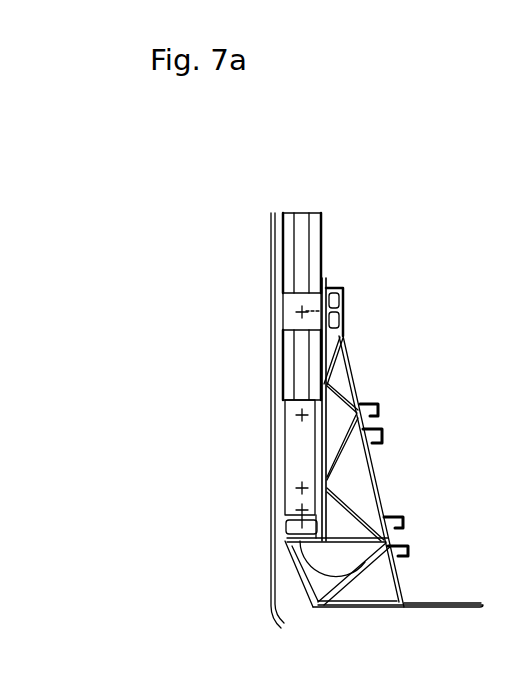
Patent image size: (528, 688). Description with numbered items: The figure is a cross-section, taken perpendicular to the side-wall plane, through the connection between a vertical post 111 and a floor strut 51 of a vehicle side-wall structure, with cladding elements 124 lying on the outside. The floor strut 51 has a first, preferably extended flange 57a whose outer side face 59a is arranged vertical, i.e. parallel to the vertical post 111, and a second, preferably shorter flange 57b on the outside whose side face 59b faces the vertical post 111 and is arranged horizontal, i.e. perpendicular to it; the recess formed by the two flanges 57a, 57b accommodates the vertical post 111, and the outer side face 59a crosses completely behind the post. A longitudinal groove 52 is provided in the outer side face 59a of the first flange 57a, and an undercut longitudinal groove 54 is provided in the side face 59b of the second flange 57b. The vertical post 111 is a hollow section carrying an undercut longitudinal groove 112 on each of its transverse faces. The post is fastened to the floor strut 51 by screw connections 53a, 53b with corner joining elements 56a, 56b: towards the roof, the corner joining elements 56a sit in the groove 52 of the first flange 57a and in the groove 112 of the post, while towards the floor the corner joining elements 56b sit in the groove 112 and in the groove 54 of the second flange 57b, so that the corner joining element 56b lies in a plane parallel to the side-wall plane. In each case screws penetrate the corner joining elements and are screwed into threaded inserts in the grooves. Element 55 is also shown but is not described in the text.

The cladding elements 124 is at (269, 230).
The vertical post 111 is at (320, 222).
The undercut longitudinal groove 112 is at (302, 258).
The screw connections 53a is at (292, 293).
The corner joining elements 56a is at (296, 313).
The outer side face 59a is at (320, 353).
The longitudinal groove 52 is at (345, 312).
The first flange 57a is at (345, 362).
The corner joining elements 56b is at (296, 414).
The screw connections 53b is at (292, 488).
The side face 59b is at (298, 504).
The undercut longitudinal groove 54 is at (285, 537).
The floor strut 51 is at (375, 468).
The holding clips 55 is at (400, 533).
The second flange 57b is at (305, 577).